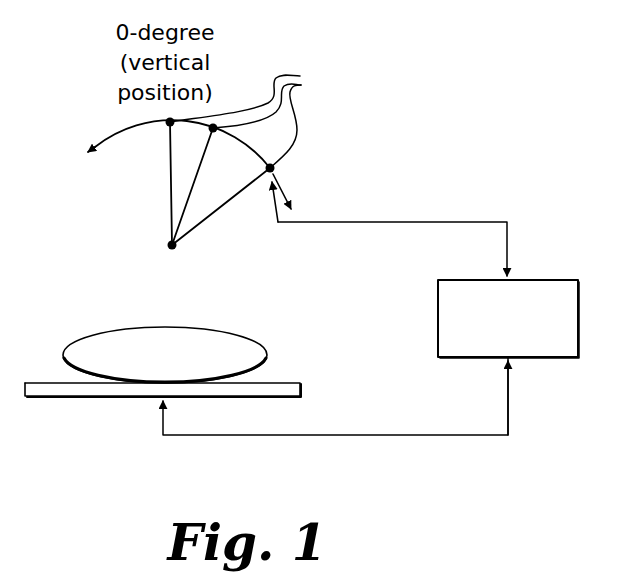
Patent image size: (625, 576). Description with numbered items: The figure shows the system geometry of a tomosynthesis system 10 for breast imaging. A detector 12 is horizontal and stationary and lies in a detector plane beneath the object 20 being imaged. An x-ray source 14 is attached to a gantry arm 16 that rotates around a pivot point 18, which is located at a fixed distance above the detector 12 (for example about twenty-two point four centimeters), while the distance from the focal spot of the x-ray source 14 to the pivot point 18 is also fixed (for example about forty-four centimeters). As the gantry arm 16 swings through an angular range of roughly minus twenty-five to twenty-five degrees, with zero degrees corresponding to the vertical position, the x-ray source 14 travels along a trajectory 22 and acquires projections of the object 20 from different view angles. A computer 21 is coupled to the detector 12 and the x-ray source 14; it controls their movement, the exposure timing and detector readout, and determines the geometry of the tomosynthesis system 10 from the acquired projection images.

The tomosynthesis system 10 is at (462, 93).
The detector 12 is at (283, 387).
The x-ray source 14 is at (251, 117).
The gantry arm 16 is at (193, 232).
The pivot point 18 is at (167, 246).
The object 20 is at (150, 364).
The computer 21 is at (523, 332).
The trajectory 22 is at (287, 186).